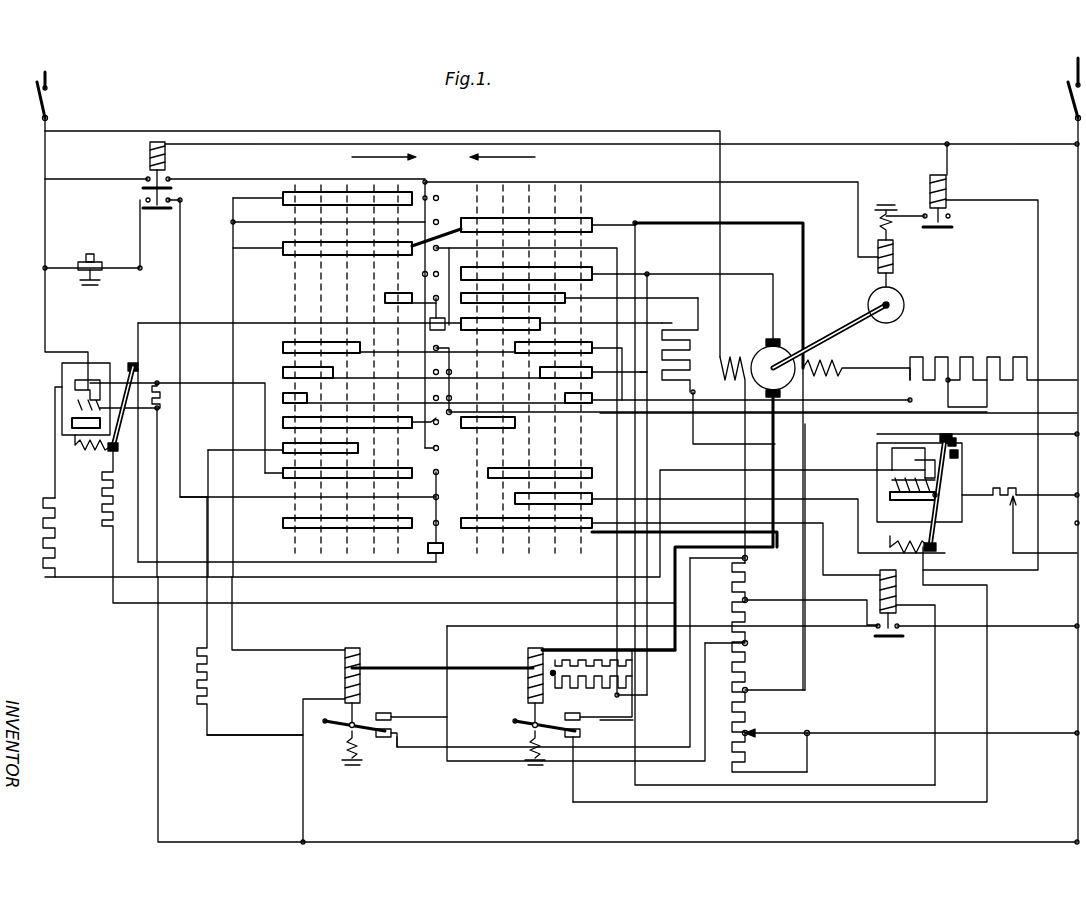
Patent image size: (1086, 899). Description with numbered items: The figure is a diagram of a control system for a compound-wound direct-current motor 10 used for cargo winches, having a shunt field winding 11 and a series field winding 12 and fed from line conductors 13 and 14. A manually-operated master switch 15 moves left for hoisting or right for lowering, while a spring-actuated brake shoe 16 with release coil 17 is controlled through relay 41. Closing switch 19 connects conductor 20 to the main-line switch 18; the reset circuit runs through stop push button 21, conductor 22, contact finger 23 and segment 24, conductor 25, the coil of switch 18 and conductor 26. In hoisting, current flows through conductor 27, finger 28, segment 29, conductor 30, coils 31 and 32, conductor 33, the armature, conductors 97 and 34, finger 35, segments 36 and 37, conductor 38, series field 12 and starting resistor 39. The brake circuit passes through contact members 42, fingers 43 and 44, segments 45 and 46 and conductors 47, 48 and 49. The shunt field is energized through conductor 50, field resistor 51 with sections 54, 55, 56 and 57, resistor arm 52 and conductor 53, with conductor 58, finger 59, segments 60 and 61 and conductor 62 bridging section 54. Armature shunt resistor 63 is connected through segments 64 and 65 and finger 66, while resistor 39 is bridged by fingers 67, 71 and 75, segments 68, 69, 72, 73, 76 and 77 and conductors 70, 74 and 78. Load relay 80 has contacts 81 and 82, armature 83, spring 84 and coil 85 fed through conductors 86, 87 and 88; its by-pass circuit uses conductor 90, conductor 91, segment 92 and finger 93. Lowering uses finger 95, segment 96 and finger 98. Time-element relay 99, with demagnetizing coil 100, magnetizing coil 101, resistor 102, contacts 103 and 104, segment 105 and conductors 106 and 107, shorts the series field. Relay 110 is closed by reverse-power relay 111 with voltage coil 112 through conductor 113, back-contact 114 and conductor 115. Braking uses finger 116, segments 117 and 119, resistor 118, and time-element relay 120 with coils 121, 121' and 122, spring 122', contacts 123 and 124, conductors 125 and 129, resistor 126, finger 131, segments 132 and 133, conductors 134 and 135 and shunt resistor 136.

The direct-current motor 10 is at (671, 488).
The shunt field winding 11 is at (732, 448).
The series field winding 12 is at (832, 366).
The line conductor 13 is at (47, 75).
The line conductor 14 is at (1076, 68).
The master switch 15 is at (441, 164).
The brake shoe 16 is at (896, 290).
The release coil 17 is at (895, 250).
The main-line switch 18 is at (146, 175).
The switch 19 is at (49, 99).
The conductor 20 is at (45, 158).
The stop push button 21 is at (92, 242).
The conductor 22 is at (178, 297).
The contact finger 23 is at (428, 548).
The contact segment 24 is at (443, 548).
The conductor 25 is at (186, 510).
The conductor 26 is at (280, 131).
The conductor 27 is at (621, 160).
The contact finger 28 is at (439, 196).
The contact segment 29 is at (347, 199).
The conductor 30 is at (234, 304).
The current coil 31 is at (356, 650).
The current coil 32 is at (528, 656).
The conductor 33 is at (600, 649).
The conductor 34 is at (620, 226).
The contact finger 35 is at (440, 246).
The contact segment 36 is at (347, 244).
The contact segment 37 is at (548, 226).
The conductor 38 is at (750, 223).
The starting resistor 39 is at (994, 261).
The relay 41 is at (948, 194).
The contact members 42 is at (146, 198).
The contact finger 43 is at (439, 498).
The contact finger 44 is at (434, 522).
The contact segment 45 is at (347, 523).
The contact segment 46 is at (670, 544).
The conductor 47 is at (706, 530).
The conductor 48 is at (998, 566).
The conductor 49 is at (672, 182).
The conductor 50 is at (448, 131).
The shunt-field resistor 51 is at (769, 659).
The resistor arm 52 is at (786, 733).
The conductor 53 is at (876, 733).
The resistor section 54 is at (730, 700).
The resistor section 55 is at (731, 664).
The resistor section 56 is at (731, 624).
The resistor section 57 is at (731, 582).
The conductor 58 is at (1026, 418).
The contact finger 59 is at (436, 420).
The contact segment 60 is at (347, 423).
The contact segment 61 is at (488, 423).
The conductor 62 is at (617, 424).
The armature shunt resistor 63 is at (712, 292).
The contact segment 64 is at (579, 298).
The contact segment 65 is at (393, 287).
The contact finger 66 is at (418, 310).
The contact finger 67 is at (440, 346).
The contact segment 68 is at (399, 348).
The contact segment 69 is at (568, 369).
The conductor 70 is at (805, 485).
The contact finger 71 is at (440, 370).
The contact segment 72 is at (308, 373).
The contact segment 73 is at (593, 373).
The conductor 74 is at (621, 362).
The contact finger 75 is at (440, 396).
The contact segment 76 is at (308, 396).
The contact segment 77 is at (565, 396).
The conductor 78 is at (737, 388).
The load responsive relay 80 is at (276, 753).
The stationary contact member 81 is at (411, 705).
The stationary contact member 82 is at (382, 740).
The movable armature 83 is at (393, 732).
The spring 84 is at (346, 726).
The coil 85 is at (362, 687).
The conductor 86 is at (633, 842).
The conductor 87 is at (478, 626).
The conductor 88 is at (947, 392).
The conductor 90 is at (689, 709).
The conductor 91 is at (216, 450).
The contact segment 92 is at (283, 448).
The contact finger 93 is at (439, 448).
The contact finger 95 is at (435, 263).
The contact segment 96 is at (526, 274).
The conductor 97 is at (686, 274).
The contact finger 98 is at (447, 214).
The inductive time-element relay 99 is at (925, 482).
The demagnetizing coil 100 is at (888, 468).
The magnetizing coil 101 is at (924, 455).
The resistor 102 is at (1000, 487).
The contact member 103 is at (958, 440).
The contact member 104 is at (960, 456).
The contact segment 105 is at (730, 521).
The conductor 106 is at (1030, 537).
The conductor 107 is at (844, 500).
The relay 110 is at (763, 677).
The reverse-power relay 111 is at (512, 682).
The voltage coil 112 is at (528, 694).
The conductor 113 is at (852, 803).
The back-contact member 114 is at (936, 545).
The conductor 115 is at (990, 524).
The contact finger 116 is at (445, 322).
The contact segment 117 is at (430, 330).
The resistor 118 is at (676, 332).
The contact segment 119 is at (500, 325).
The inductive time-element relay 120 is at (86, 383).
The demagnetizing coil 121 is at (42, 442).
The demagnetizing coil 121' is at (69, 537).
The magnetizing coil 122 is at (116, 409).
The adjustable spring 122' is at (85, 454).
The contact member 123 is at (128, 364).
The contact member 124 is at (136, 368).
The conductor 125 is at (420, 603).
The resistor 126 is at (101, 498).
The conductor 129 is at (204, 323).
The contact finger 131 is at (438, 470).
The contact segment 132 is at (540, 473).
The contact segment 133 is at (338, 473).
The conductor 134 is at (200, 382).
The conductor 135 is at (154, 660).
The shunt resistor 136 is at (162, 395).